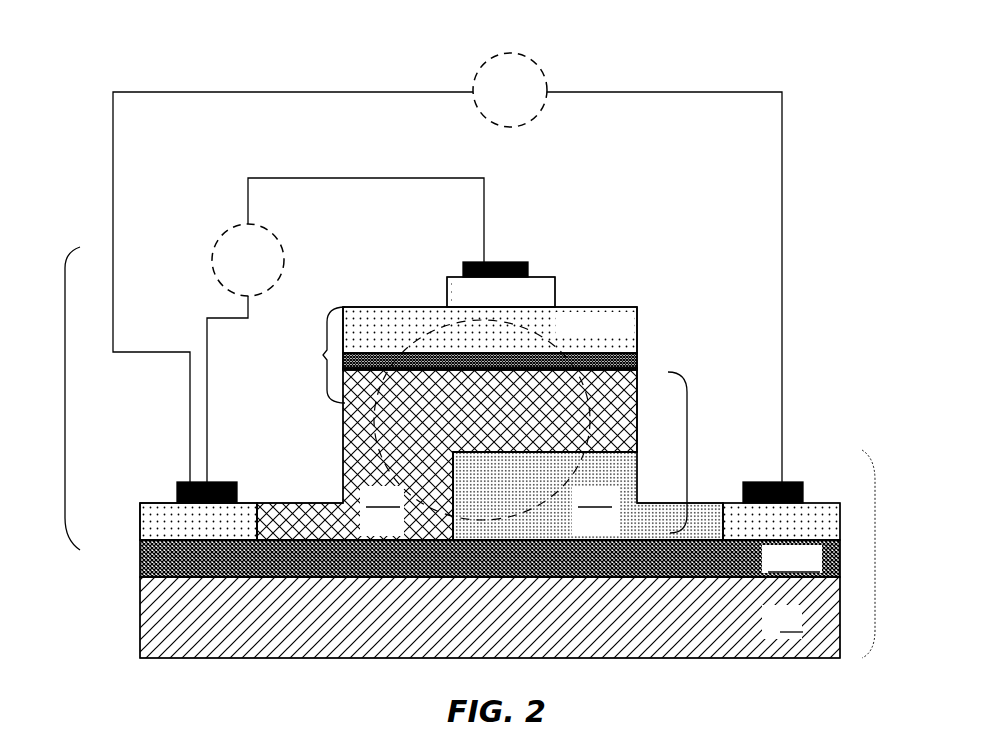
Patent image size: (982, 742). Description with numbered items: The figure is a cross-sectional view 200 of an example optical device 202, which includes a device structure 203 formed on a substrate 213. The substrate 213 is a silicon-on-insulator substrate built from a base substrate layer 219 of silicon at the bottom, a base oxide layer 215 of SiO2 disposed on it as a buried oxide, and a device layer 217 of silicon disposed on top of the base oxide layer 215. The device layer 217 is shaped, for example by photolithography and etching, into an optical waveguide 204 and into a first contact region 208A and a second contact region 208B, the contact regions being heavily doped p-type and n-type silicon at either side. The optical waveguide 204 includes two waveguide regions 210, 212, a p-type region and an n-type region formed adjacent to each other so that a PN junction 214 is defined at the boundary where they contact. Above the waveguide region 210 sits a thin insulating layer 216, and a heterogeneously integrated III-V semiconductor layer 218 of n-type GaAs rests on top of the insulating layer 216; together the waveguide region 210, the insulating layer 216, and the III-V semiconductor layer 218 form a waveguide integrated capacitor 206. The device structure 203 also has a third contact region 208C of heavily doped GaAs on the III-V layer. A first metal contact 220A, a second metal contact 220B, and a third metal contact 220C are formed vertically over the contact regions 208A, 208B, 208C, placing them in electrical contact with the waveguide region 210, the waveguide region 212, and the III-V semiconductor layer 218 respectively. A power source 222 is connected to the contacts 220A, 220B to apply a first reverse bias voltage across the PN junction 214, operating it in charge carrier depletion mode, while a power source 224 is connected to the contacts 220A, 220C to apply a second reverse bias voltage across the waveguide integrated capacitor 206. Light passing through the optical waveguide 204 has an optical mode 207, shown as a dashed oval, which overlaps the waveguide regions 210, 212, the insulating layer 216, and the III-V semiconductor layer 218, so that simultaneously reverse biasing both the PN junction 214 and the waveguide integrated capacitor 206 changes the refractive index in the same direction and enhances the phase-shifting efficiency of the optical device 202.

The cross-sectional view 200 is at (650, 208).
The optical device 202 is at (642, 300).
The device structure 203 is at (64, 393).
The optical waveguide 204 is at (689, 455).
The waveguide integrated capacitor 206 is at (325, 355).
The optical mode 207 is at (443, 305).
The first contact region 208A is at (155, 503).
The second contact region 208B is at (822, 503).
The third contact region 208C is at (452, 277).
The waveguide region 210 is at (447, 454).
The waveguide region 212 is at (588, 496).
The substrate 213 is at (877, 553).
The PN junction 214 is at (638, 418).
The base oxide layer 215 is at (160, 568).
The insulating layer 216 is at (640, 360).
The device layer 217 is at (138, 525).
The III-V semiconductor layer 218 is at (565, 307).
The base substrate layer 219 is at (165, 627).
The first metal contact 220A is at (240, 497).
The second metal contact 220B is at (763, 482).
The third metal contact 220C is at (500, 262).
The power source 222 is at (515, 53).
The power source 224 is at (262, 230).